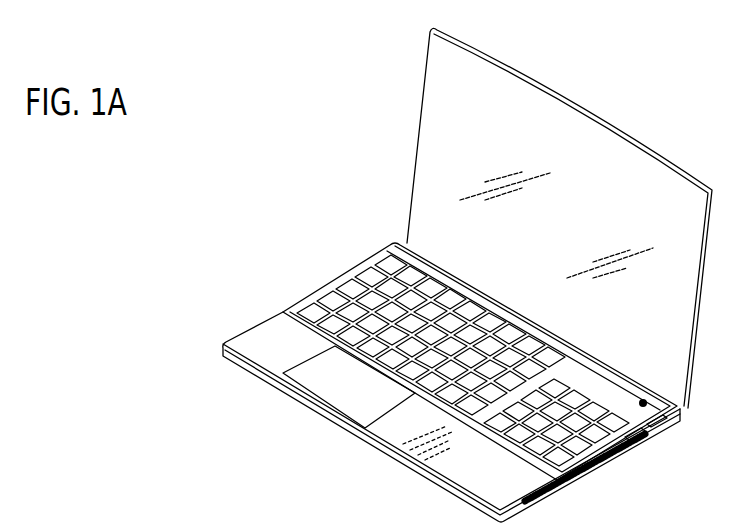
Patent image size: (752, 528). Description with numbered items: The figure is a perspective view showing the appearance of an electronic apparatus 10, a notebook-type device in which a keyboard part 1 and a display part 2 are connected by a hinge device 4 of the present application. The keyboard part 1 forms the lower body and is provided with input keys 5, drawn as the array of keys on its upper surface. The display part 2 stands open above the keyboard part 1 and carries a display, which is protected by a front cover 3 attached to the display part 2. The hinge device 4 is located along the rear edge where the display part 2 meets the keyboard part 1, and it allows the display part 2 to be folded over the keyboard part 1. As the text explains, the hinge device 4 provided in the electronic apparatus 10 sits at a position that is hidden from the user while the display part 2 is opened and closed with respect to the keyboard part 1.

The electronic apparatus 10 is at (256, 99).
The keyboard part 1 is at (323, 287).
The display part 2 is at (422, 93).
The front cover 3 is at (546, 142).
The hinge device 4 is at (424, 252).
The input keys 5 is at (372, 284).